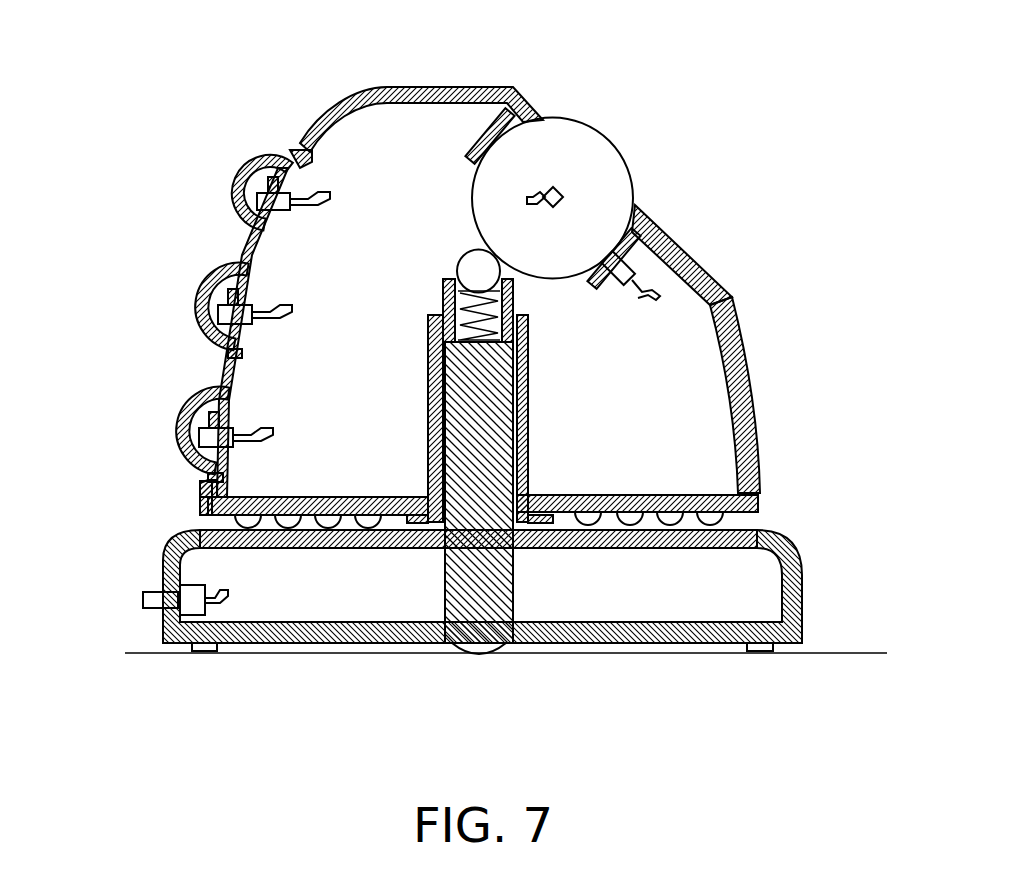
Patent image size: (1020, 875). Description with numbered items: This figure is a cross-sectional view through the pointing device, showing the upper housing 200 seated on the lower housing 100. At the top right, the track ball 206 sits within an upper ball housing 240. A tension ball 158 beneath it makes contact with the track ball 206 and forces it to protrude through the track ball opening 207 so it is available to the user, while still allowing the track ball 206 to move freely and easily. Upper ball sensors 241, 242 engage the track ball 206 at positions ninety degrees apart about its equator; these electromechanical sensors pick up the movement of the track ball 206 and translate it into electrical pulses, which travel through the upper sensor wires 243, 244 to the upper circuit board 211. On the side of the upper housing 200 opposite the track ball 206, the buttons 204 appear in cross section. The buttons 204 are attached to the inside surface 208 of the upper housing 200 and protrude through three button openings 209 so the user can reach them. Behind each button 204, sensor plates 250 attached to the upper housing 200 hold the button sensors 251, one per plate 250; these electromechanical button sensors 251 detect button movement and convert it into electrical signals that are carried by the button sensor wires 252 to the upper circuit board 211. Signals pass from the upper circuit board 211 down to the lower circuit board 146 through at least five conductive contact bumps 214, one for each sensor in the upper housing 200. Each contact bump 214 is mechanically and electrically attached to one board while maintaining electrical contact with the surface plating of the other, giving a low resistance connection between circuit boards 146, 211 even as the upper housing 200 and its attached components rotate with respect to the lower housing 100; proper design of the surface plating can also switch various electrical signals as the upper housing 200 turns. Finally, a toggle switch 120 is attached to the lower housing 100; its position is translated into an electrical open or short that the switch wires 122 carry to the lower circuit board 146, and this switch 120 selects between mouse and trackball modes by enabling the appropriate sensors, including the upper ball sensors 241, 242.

The lower housing 100 is at (800, 555).
The toggle switch 120 is at (143, 600).
The switch wires 122 is at (200, 585).
The lower circuit board 146 is at (700, 541).
The tension ball 158 is at (478, 268).
The upper housing 200 is at (760, 390).
The buttons 204 is at (258, 178).
The track ball 206 is at (618, 196).
The track ball opening 207 is at (637, 204).
The inside surface 208 is at (345, 125).
The button openings 209 is at (298, 148).
The upper circuit board 211 is at (213, 473).
The conductive contact bumps 214 is at (628, 521).
The upper ball housing 240 is at (633, 226).
The upper ball sensor 241 is at (554, 192).
The upper ball sensor 242 is at (620, 262).
The upper sensor wire 243 is at (535, 196).
The upper sensor wire 244 is at (647, 288).
The sensor plates 250 is at (276, 212).
The button sensors 251 is at (282, 205).
The button sensor wires 252 is at (293, 204).